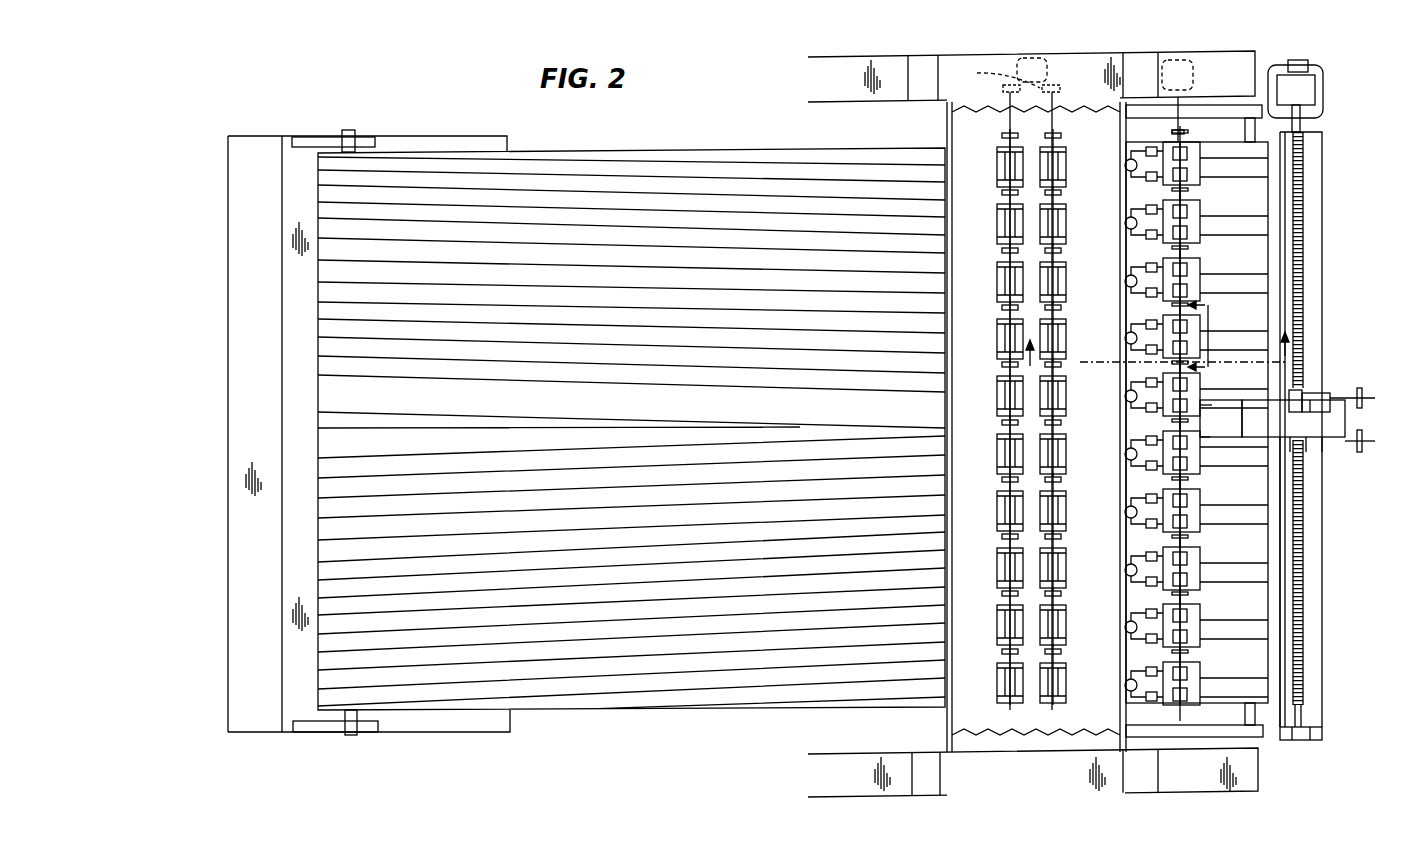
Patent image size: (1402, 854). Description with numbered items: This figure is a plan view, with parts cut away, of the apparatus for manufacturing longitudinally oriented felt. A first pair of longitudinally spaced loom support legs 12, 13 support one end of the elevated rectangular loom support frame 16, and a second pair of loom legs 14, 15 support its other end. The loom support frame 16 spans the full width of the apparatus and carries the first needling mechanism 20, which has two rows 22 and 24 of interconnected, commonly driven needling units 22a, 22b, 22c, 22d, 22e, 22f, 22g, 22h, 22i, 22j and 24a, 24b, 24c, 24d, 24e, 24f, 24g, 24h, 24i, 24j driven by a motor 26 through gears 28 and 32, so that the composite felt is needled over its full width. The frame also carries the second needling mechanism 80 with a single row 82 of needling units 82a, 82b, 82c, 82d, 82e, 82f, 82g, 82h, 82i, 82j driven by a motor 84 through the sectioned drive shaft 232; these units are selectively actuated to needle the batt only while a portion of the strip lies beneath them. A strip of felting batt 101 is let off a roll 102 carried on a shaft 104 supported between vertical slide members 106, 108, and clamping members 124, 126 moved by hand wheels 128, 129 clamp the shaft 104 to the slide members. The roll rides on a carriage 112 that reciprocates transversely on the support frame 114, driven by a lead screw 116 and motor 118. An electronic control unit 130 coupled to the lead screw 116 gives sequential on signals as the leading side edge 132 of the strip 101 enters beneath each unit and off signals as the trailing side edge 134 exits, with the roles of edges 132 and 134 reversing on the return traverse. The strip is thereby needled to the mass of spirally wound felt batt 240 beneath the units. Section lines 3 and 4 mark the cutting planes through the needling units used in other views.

The loom support leg 12 is at (822, 775).
The loom support leg 13 is at (1254, 758).
The loom leg 14 is at (822, 84).
The loom leg 15 is at (1229, 58).
The loom support frame 16 is at (997, 57).
The first needling mechanism 20 is at (1035, 722).
The needling row 22 is at (1060, 710).
The needling row 24 is at (1011, 712).
The motor 26 is at (1048, 66).
The gear 28 is at (999, 76).
The gear 32 is at (1000, 90).
The second needling mechanism 80 is at (1210, 745).
The needling row 82 is at (1182, 710).
The motor 84 is at (1176, 80).
The strip of felting batt 101 is at (1234, 427).
The roll of felting batt 102 is at (1285, 427).
The shaft 104 is at (1302, 396).
The slide member 106 is at (1322, 393).
The slide member 108 is at (1328, 441).
The carriage 112 is at (1287, 445).
The support frame 114 is at (1312, 586).
The lead screw 116 is at (1304, 210).
The motor 118 is at (1312, 90).
The clamping member 124 is at (1312, 400).
The clamping member 126 is at (1307, 442).
The hand wheel 128 is at (1366, 392).
The hand wheel 129 is at (1366, 438).
The electronic control unit 130 is at (1300, 62).
The leading side edge 132 is at (1210, 438).
The trailing side edge 134 is at (1213, 403).
The drive shaft 232 is at (1185, 108).
The spirally wound strips of felt batt 240 is at (640, 652).
The section line 3 is at (1156, 360).
The section line 4 is at (1183, 339).
The needling unit 22a is at (1064, 690).
The needling unit 22b is at (1064, 632).
The needling unit 22c is at (1064, 575).
The needling unit 22d is at (1064, 518).
The needling unit 22e is at (1064, 461).
The needling unit 22f is at (1064, 403).
The needling unit 22g is at (1064, 346).
The needling unit 22h is at (1064, 289).
The needling unit 22i is at (1064, 231).
The needling unit 22j is at (1064, 174).
The needling unit 24a is at (999, 683).
The needling unit 24b is at (999, 625).
The needling unit 24c is at (999, 568).
The needling unit 24d is at (999, 511).
The needling unit 24e is at (999, 454).
The needling unit 24f is at (999, 396).
The needling unit 24g is at (999, 339).
The needling unit 24h is at (999, 282).
The needling unit 24i is at (999, 224).
The needling unit 24j is at (999, 167).
The needling unit 82a is at (1192, 698).
The needling unit 82b is at (1192, 640).
The needling unit 82c is at (1192, 583).
The needling unit 82d is at (1192, 525).
The needling unit 82e is at (1168, 470).
The needling unit 82f is at (1168, 410).
The needling unit 82g is at (1201, 338).
The needling unit 82h is at (1192, 294).
The needling unit 82i is at (1192, 236).
The needling unit 82j is at (1192, 178).